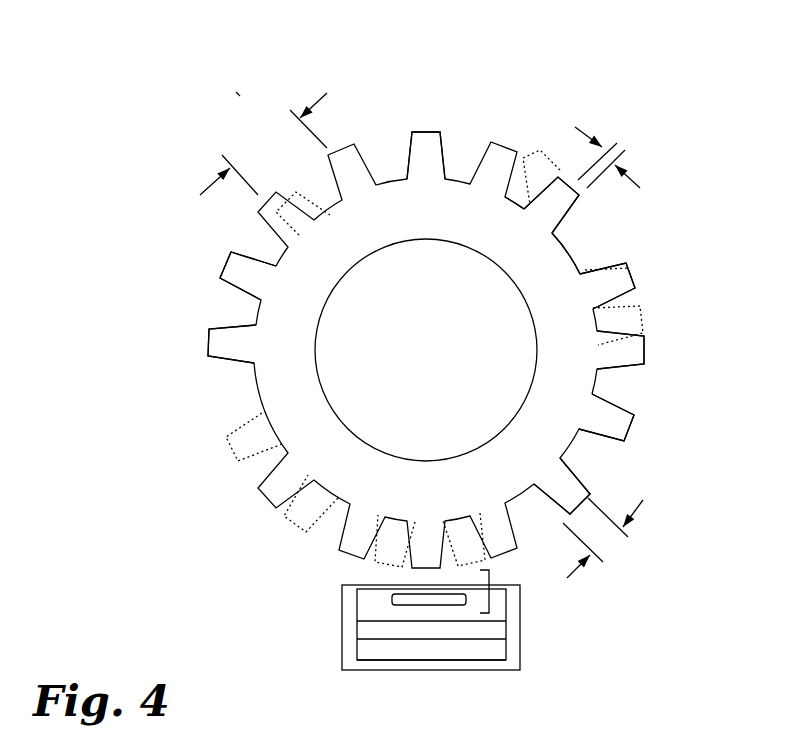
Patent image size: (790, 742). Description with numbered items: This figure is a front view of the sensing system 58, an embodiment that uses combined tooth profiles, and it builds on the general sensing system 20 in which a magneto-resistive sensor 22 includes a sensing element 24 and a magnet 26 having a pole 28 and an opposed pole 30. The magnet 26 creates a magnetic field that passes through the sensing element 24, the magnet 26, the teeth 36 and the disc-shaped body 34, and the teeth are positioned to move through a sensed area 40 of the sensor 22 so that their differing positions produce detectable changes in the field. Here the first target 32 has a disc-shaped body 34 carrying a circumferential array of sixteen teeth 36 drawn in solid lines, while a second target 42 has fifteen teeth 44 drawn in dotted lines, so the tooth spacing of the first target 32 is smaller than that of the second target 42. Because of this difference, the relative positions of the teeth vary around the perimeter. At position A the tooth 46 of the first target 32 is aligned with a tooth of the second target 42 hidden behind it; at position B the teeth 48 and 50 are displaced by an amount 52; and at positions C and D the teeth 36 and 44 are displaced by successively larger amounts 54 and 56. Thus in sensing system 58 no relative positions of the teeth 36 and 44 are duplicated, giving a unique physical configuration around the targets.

The sensing system 20 is at (192, 521).
The magneto-resistive sensor 22 is at (528, 688).
The sensing element 24 is at (395, 600).
The magnet 26 is at (388, 650).
The pole 28 is at (362, 632).
The opposed pole 30 is at (430, 652).
The first target 32 is at (545, 268).
The disc-shaped body 34 is at (290, 298).
The teeth 36 is at (627, 262).
The sensed area 40 is at (493, 603).
The second target 42 is at (262, 404).
The teeth 44 is at (608, 456).
The tooth 46 is at (442, 152).
The tooth 48 is at (545, 197).
The tooth 50 is at (590, 209).
The amount 52 is at (607, 140).
The amount 54 is at (597, 558).
The amount 56 is at (220, 160).
The sensing system 58 is at (237, 92).